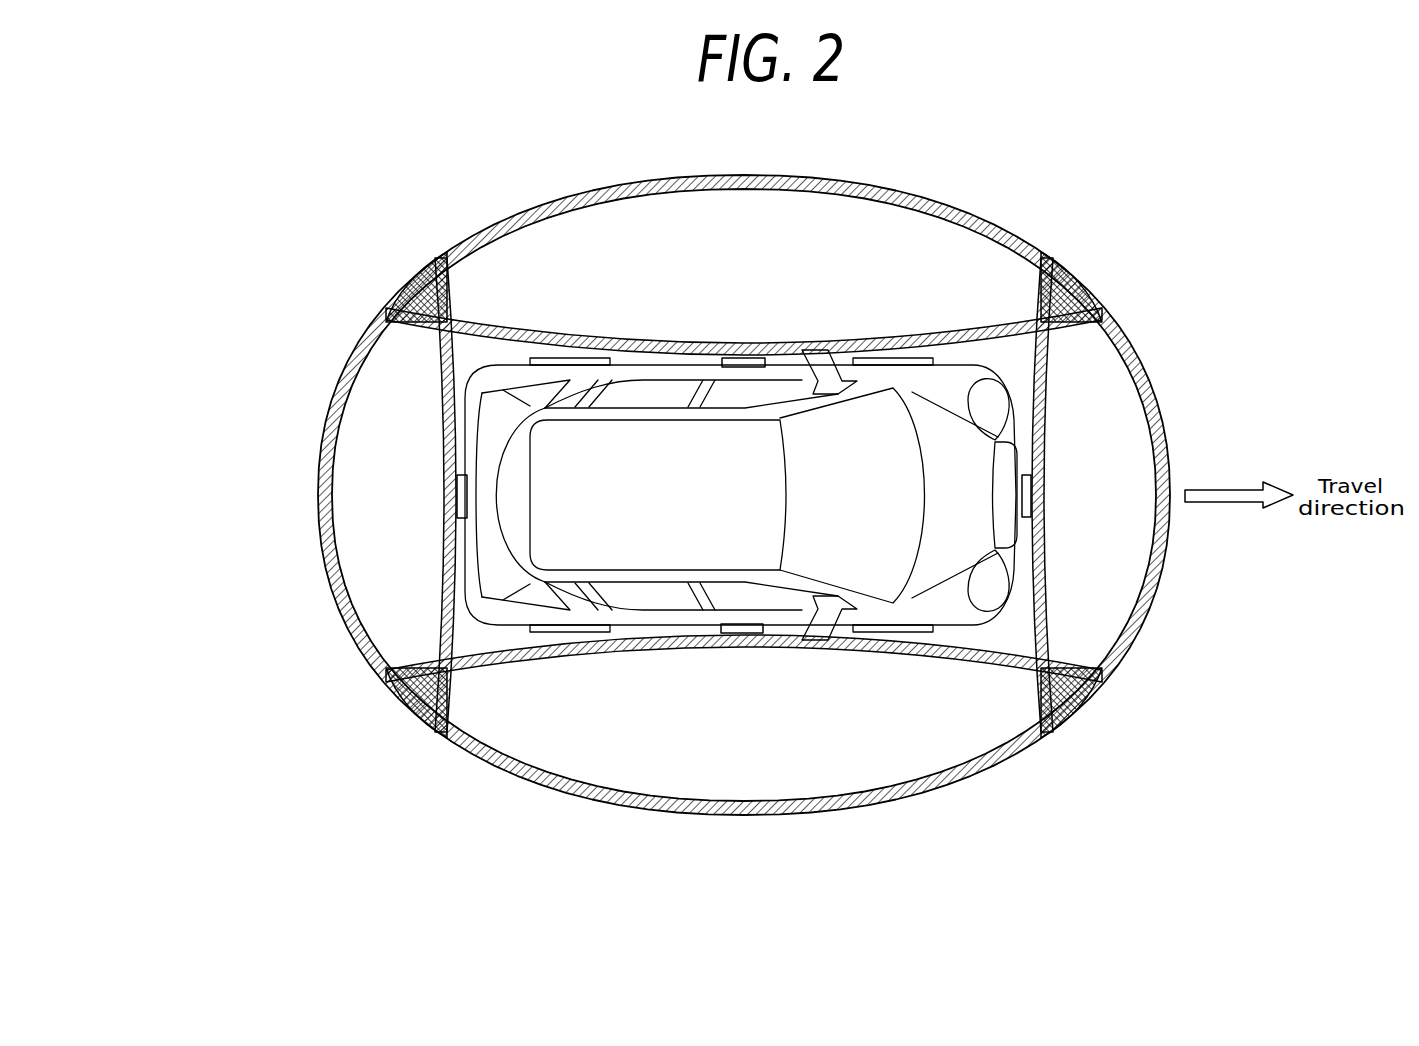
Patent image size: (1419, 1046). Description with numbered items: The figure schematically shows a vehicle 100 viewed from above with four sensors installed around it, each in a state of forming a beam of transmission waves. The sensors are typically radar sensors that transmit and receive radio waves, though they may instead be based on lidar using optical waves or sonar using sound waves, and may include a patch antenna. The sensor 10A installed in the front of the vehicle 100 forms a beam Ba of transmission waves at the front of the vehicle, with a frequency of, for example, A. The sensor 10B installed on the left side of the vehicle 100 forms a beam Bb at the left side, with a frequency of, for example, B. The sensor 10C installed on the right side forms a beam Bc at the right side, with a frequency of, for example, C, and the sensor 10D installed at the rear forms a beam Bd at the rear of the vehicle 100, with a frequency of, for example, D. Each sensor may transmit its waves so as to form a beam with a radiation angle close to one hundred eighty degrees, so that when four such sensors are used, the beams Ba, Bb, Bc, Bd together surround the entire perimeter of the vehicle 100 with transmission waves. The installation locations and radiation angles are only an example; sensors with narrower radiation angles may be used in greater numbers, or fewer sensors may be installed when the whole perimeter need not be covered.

The vehicle 100 is at (747, 501).
The sensor 10A is at (1032, 497).
The sensor 10B is at (740, 358).
The sensor 10C is at (740, 633).
The sensor 10D is at (458, 496).
The beam Ba is at (1115, 428).
The beam Bb is at (737, 226).
The beam Bc is at (749, 763).
The beam Bd is at (370, 443).